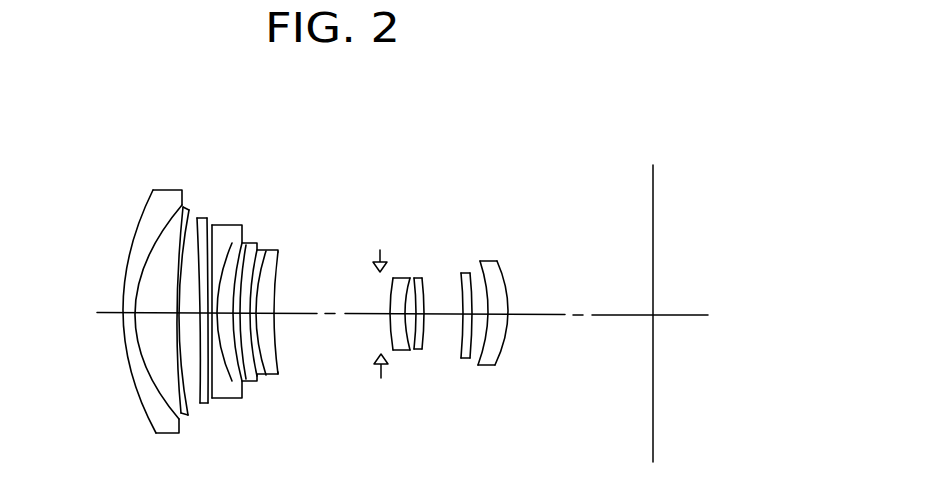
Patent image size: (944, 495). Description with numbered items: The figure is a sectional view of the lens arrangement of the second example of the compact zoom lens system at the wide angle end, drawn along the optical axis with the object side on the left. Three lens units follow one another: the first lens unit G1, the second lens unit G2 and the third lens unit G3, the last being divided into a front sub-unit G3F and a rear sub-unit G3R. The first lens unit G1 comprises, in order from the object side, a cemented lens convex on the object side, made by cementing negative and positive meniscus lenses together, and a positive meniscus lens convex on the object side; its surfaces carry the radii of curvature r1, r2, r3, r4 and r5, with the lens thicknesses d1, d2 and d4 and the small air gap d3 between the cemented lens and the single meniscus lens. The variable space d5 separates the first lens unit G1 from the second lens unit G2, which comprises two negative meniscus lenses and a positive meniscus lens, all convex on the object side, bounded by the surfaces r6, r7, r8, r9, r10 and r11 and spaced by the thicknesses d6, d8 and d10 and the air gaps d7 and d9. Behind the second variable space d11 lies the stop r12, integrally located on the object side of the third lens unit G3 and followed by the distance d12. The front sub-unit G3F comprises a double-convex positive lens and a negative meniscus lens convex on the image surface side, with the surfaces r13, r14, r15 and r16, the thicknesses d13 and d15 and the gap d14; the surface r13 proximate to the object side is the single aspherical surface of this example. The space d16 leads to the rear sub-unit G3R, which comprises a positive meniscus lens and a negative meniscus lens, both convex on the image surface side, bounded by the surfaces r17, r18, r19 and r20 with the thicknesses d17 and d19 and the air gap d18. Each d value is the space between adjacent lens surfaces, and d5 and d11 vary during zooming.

The first lens unit G1 is at (213, 142).
The second lens unit G2 is at (292, 142).
The third lens unit G3 is at (517, 103).
The front sub-unit of the third lens unit G3F is at (427, 145).
The rear sub-unit of the third lens unit G3R is at (505, 145).
The radius of curvature of the first lens surface r1 is at (145, 213).
The radius of curvature of the second lens surface r2 is at (168, 218).
The radius of curvature of the third lens surface r3 is at (176, 210).
The radius of curvature of the fourth lens surface r4 is at (186, 204).
The radius of curvature of the fifth lens surface r5 is at (205, 220).
The radius of curvature of the sixth lens surface r6 is at (232, 240).
The radius of curvature of the seventh lens surface r7 is at (239, 240).
The radius of curvature of the eighth lens surface r8 is at (253, 242).
The radius of curvature of the ninth lens surface r9 is at (266, 252).
The radius of curvature of the tenth lens surface r10 is at (281, 254).
The radius of curvature of the eleventh lens surface r11 is at (279, 263).
The stop r12 is at (380, 250).
The radius of curvature of the thirteenth lens surface r13 is at (392, 277).
The radius of curvature of the fourteenth lens surface r14 is at (404, 276).
The radius of curvature of the fifteenth lens surface r15 is at (415, 277).
The radius of curvature of the sixteenth lens surface r16 is at (423, 277).
The radius of curvature of the seventeenth lens surface r17 is at (462, 272).
The radius of curvature of the eighteenth lens surface r18 is at (470, 272).
The radius of curvature of the nineteenth lens surface r19 is at (494, 260).
The radius of curvature of the twentieth lens surface r20 is at (507, 278).
The space between the first and second lens surfaces d1 is at (125, 328).
The space between the second and third lens surfaces d2 is at (158, 330).
The space between the third and fourth lens surfaces d3 is at (188, 417).
The space between the fourth and fifth lens surfaces d4 is at (204, 407).
The space between the fifth and sixth lens surfaces d5 is at (206, 405).
The space between the sixth and seventh lens surfaces d6 is at (230, 396).
The space between the seventh and eighth lens surfaces d7 is at (236, 393).
The space between the eighth and ninth lens surfaces d8 is at (250, 382).
The space between the ninth and tenth lens surfaces d9 is at (262, 375).
The space between the tenth and eleventh lens surfaces d10 is at (272, 340).
The space between the eleventh and twelfth lens surfaces d11 is at (338, 330).
The space between the stop and the thirteenth lens surface d12 is at (393, 366).
The space between the thirteenth and fourteenth lens surfaces d13 is at (400, 356).
The space between the fourteenth and fifteenth lens surfaces d14 is at (408, 352).
The space between the fifteenth and sixteenth lens surfaces d15 is at (418, 348).
The space between the sixteenth and seventeenth lens surfaces d16 is at (424, 334).
The space between the seventeenth and eighteenth lens surfaces d17 is at (462, 360).
The space between the eighteenth and nineteenth lens surfaces d18 is at (473, 356).
The space between the nineteenth and twentieth lens surfaces d19 is at (507, 333).